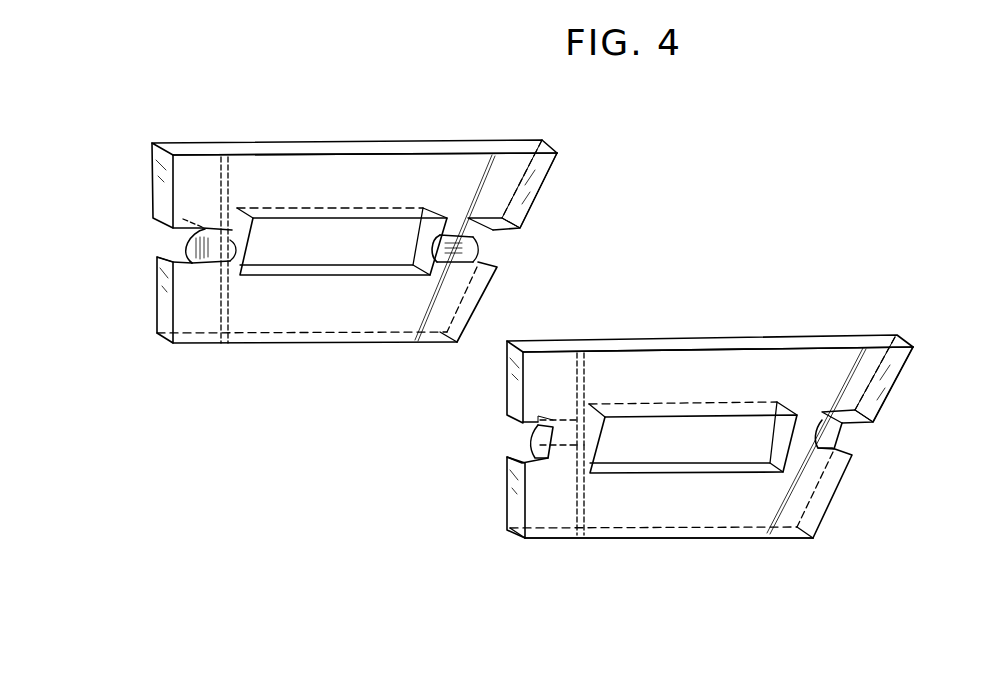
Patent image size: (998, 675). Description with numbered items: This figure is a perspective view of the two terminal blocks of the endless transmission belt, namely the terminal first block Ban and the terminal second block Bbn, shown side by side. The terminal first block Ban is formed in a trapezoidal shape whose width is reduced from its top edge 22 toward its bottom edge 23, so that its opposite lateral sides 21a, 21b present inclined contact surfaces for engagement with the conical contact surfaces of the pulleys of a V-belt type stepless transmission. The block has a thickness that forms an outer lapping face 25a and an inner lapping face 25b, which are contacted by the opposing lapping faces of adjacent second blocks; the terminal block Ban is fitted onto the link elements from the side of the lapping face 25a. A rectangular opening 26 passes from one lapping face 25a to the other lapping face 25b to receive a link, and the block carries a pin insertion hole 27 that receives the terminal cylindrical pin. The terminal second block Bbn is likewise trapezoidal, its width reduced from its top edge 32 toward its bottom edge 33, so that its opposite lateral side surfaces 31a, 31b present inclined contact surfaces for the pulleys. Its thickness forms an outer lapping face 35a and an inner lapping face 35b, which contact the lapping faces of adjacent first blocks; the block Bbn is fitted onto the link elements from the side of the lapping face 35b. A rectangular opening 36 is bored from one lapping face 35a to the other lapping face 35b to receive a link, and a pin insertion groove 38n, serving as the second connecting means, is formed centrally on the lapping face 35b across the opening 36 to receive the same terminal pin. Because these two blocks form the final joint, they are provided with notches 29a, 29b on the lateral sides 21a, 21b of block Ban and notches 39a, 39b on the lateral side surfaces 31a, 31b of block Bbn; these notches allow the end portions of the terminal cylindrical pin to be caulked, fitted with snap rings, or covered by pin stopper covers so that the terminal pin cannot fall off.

The top edge 22 is at (445, 148).
The terminal first block Ban is at (355, 148).
The lateral side 21a is at (160, 192).
The lateral side 21b is at (513, 183).
The notch 29a is at (180, 247).
The notch 29b is at (505, 230).
The pin insertion hole 27 is at (205, 252).
The opening 26 is at (258, 258).
The outer lapping face 25a is at (252, 148).
The inner lapping face 25b is at (310, 316).
The bottom edge 23 is at (380, 338).
The top edge 32 is at (670, 345).
The terminal second block Bbn is at (767, 336).
The lateral side surface 31a is at (517, 385).
The lateral side surface 31b is at (878, 369).
The pin insertion groove 38n is at (528, 437).
The notch 39a is at (520, 466).
The notch 39b is at (857, 422).
The bottom edge 33 is at (622, 525).
The opening 36 is at (745, 450).
The outer lapping face 35a is at (620, 345).
The inner lapping face 35b is at (683, 512).